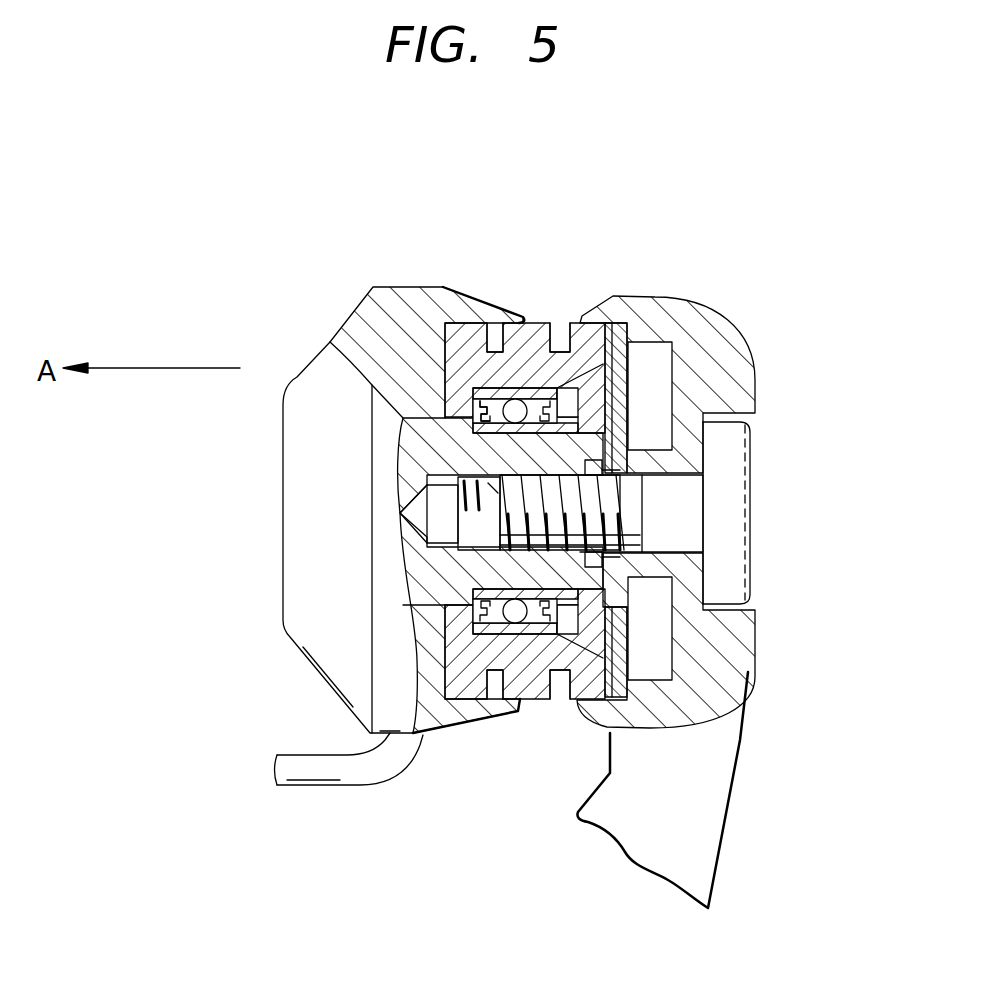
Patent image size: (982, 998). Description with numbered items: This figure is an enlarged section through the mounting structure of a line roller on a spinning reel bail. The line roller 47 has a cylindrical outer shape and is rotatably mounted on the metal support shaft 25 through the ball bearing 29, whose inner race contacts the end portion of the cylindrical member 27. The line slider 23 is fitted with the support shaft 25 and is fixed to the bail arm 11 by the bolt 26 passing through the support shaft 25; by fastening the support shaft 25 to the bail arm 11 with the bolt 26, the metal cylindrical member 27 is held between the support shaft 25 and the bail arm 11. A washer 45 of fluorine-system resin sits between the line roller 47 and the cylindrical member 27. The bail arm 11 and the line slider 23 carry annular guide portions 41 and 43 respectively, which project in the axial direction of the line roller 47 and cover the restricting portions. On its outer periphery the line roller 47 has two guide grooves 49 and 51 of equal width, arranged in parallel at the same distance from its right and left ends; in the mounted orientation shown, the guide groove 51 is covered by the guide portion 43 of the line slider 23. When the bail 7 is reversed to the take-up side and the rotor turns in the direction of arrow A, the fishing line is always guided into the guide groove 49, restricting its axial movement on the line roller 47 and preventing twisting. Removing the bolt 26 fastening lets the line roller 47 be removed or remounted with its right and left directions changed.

The bail 7 is at (277, 768).
The bail arm 11 is at (750, 718).
The line slider 23 is at (297, 540).
The support shaft 25 is at (413, 463).
The bolt 26 is at (742, 512).
The cylindrical member 27 is at (627, 428).
The ball bearing 29 is at (455, 397).
The guide portion 41 is at (579, 320).
The guide portion 43 is at (520, 307).
The washer 45 is at (610, 368).
The line roller 47 is at (547, 310).
The guide groove 49 is at (554, 322).
The guide groove 51 is at (523, 317).